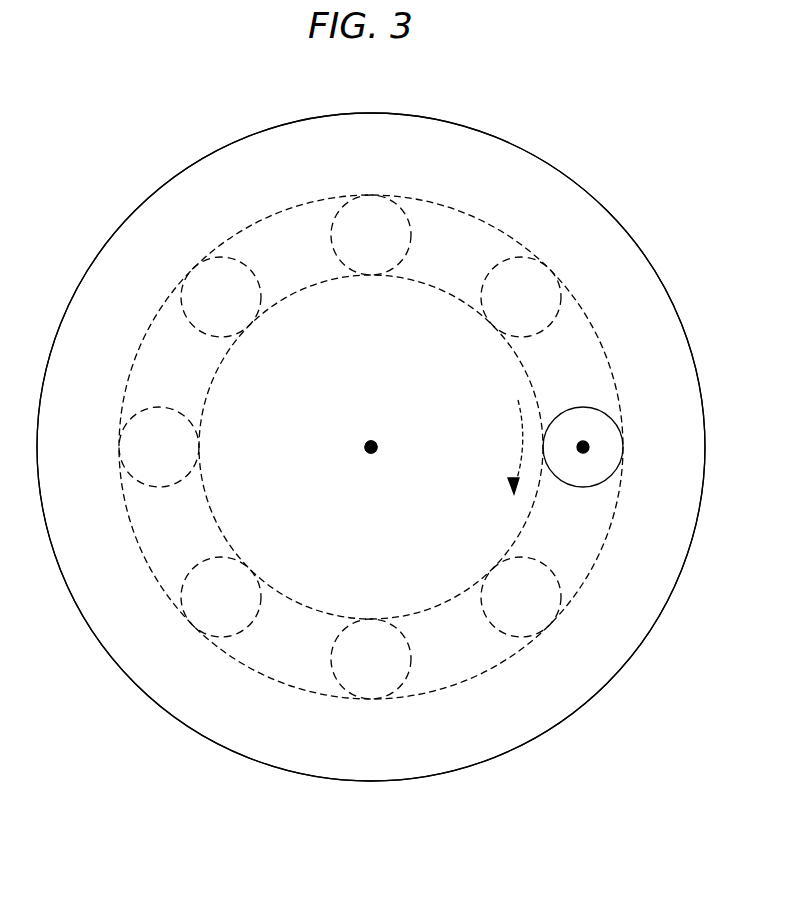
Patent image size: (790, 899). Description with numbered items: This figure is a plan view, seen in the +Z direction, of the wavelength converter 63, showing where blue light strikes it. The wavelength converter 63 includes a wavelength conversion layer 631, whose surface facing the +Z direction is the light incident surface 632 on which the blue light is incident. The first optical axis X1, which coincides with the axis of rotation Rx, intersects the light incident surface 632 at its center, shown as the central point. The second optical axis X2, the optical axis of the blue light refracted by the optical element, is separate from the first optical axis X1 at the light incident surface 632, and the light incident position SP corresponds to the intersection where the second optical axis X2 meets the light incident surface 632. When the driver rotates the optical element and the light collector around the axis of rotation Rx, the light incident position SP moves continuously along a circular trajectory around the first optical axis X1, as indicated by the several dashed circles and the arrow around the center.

The wavelength converter 63 is at (548, 162).
The wavelength conversion layer 631 is at (371, 447).
The light incident surface 632 is at (238, 160).
The light incident position SP is at (384, 200).
The first optical axis X1 is at (374, 442).
The axis of rotation Rx is at (444, 447).
The second optical axis X2 is at (583, 455).